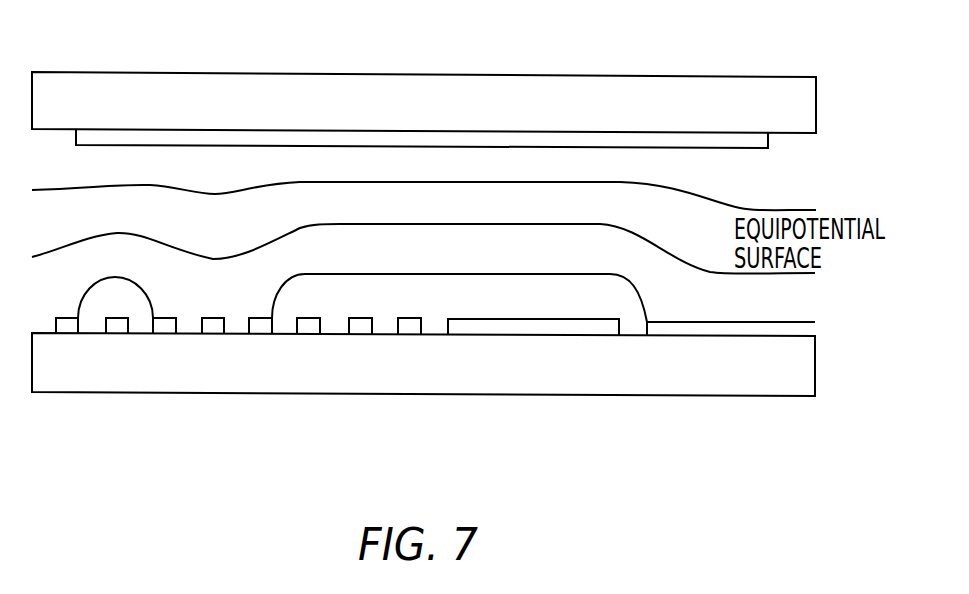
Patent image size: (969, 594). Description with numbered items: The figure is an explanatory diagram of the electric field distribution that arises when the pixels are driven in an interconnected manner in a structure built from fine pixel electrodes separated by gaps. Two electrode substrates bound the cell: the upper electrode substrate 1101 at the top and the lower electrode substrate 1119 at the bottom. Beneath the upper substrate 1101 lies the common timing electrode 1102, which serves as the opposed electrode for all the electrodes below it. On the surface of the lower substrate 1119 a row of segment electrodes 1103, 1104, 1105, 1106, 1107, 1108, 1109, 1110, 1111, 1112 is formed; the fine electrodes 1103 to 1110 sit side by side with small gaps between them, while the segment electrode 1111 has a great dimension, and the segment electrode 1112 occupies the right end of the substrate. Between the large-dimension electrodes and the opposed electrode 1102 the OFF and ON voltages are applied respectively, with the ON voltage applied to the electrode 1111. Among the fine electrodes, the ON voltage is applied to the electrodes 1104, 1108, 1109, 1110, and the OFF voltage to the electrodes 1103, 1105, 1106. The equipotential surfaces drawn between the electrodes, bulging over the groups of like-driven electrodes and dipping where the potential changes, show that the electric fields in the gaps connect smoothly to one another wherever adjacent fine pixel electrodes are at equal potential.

The upper electrode substrate 1101 is at (670, 90).
The common timing electrode 1102 is at (486, 140).
The segment electrode 1103 is at (68, 326).
The segment electrode 1104 is at (117, 326).
The segment electrode 1105 is at (166, 326).
The segment electrode 1106 is at (213, 326).
The segment electrode 1107 is at (261, 326).
The segment electrode 1108 is at (310, 326).
The segment electrode 1109 is at (361, 326).
The segment electrode 1110 is at (410, 326).
The segment electrode 1111 is at (567, 326).
The segment electrode 1112 is at (664, 330).
The lower electrode substrate 1119 is at (733, 380).